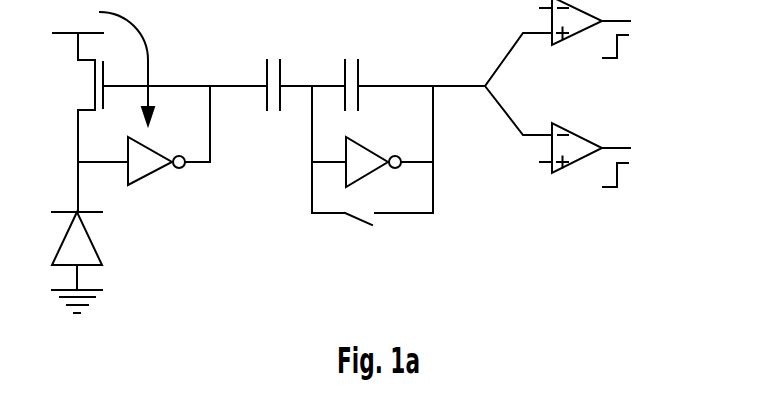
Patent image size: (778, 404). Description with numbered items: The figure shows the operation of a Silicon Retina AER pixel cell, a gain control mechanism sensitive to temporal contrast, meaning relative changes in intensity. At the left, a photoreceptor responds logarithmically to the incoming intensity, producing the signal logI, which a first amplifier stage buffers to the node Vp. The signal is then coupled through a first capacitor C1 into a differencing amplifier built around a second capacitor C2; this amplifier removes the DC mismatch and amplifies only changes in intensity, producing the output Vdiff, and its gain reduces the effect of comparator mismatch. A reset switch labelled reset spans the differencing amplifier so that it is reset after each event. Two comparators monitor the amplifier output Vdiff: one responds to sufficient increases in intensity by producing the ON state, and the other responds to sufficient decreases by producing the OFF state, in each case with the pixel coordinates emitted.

The logarithmic photocurrent node logI is at (207, 68).
The first inverter amplifier output Vp is at (161, 135).
The first capacitor C1 is at (304, 63).
The second capacitor C2 is at (388, 63).
The element reset is at (372, 234).
The differentiating amplifier output node Vdiff is at (473, 71).
The ON state ON is at (602, 29).
The OFF state OFF is at (605, 155).